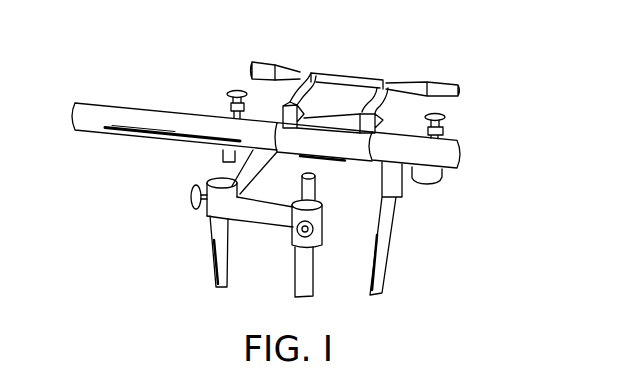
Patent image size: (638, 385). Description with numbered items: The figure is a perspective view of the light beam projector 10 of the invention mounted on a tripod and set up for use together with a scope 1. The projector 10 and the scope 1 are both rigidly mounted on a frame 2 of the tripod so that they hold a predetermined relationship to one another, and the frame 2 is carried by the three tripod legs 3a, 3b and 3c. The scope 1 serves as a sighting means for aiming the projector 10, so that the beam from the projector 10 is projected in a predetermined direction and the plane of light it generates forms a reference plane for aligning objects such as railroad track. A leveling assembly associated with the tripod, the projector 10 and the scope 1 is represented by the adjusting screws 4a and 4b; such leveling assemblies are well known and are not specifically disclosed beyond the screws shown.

The light beam projector 10 is at (146, 118).
The scope 1 is at (290, 72).
The frame 2 is at (230, 168).
The leg 3a is at (392, 231).
The leg 3b is at (313, 266).
The leg 3c is at (224, 257).
The adjusting screw 4a is at (442, 113).
The adjusting screw 4b is at (236, 88).